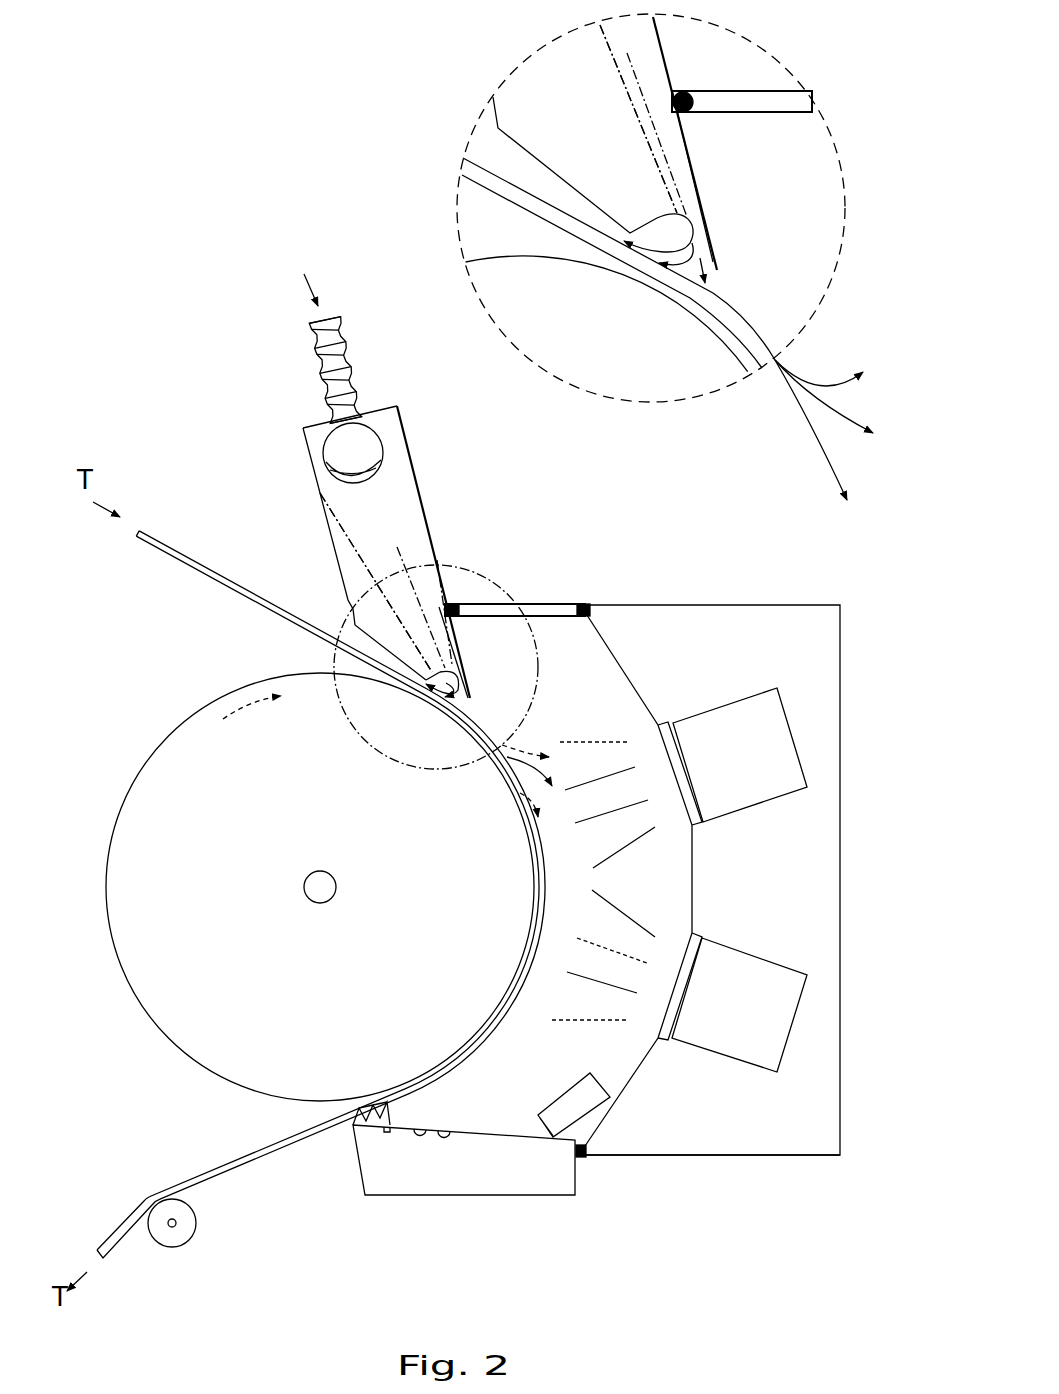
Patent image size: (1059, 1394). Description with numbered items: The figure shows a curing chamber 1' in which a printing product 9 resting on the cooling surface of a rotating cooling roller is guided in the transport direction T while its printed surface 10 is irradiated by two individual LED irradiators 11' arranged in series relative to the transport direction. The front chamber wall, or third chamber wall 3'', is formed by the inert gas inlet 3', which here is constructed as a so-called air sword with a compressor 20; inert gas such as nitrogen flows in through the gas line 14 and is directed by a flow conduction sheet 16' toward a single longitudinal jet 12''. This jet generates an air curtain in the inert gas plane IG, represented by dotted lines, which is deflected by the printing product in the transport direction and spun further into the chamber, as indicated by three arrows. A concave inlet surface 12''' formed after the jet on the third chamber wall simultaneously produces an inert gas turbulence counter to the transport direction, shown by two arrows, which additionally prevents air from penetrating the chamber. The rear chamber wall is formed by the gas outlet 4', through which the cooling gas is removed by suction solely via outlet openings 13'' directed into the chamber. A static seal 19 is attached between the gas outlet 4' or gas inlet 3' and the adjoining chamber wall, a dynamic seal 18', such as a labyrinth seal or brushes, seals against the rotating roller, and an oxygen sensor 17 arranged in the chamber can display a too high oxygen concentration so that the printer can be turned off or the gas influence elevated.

The curing chamber 1' is at (665, 257).
The inert gas inlet 3' is at (402, 552).
The third chamber wall 3'' is at (541, 388).
The gas outlet 4' is at (464, 1204).
The printing product 9 is at (231, 584).
The printed surface 10 is at (173, 537).
The LED irradiators 11' is at (739, 849).
The longitudinal jet 12'' is at (606, 406).
The concave inlet surface 12''' is at (636, 423).
The outlet openings 13'' is at (411, 1205).
The gas line 14 is at (359, 371).
The flow conduction sheet 16' is at (514, 342).
The oxygen sensor 17 is at (550, 1140).
The dynamic seal 18' is at (341, 1180).
The static seal 19 is at (456, 603).
The compressor 20 is at (383, 445).
The inert gas plane IG is at (503, 397).